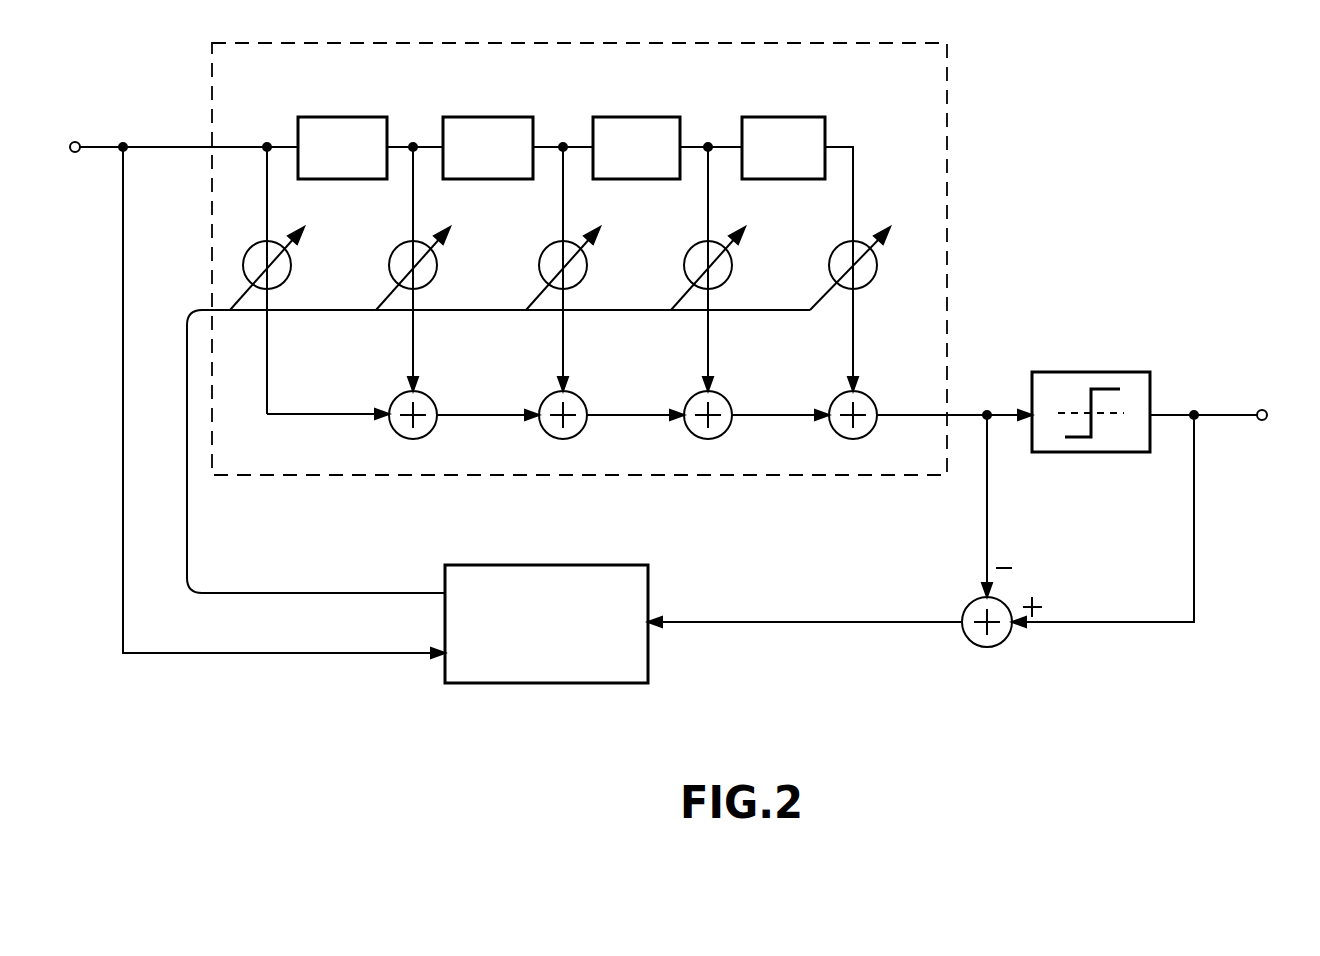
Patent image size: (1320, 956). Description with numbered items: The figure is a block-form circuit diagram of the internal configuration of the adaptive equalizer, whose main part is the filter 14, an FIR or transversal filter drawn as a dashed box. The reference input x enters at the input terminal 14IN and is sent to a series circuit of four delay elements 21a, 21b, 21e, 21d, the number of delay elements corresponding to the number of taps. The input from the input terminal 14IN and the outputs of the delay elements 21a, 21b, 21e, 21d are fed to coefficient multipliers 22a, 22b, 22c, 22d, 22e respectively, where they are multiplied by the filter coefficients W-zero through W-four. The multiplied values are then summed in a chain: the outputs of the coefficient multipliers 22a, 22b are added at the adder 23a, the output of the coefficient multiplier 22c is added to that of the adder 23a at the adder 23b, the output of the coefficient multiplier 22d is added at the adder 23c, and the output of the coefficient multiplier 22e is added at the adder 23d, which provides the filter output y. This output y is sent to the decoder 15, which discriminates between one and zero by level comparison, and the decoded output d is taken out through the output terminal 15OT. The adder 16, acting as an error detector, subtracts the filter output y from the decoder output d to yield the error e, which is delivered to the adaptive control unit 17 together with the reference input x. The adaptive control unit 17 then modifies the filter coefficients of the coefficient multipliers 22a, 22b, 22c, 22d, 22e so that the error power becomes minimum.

The filter 14 is at (947, 152).
The input terminal 14IN is at (75, 142).
The decoder 15 is at (1091, 372).
The output terminal 15OT is at (1262, 409).
The adder (error detector) 16 is at (1008, 640).
The adaptive control unit 17 is at (642, 595).
The delay element 21a is at (357, 117).
The delay element 21b is at (496, 117).
The delay element 21e is at (635, 117).
The delay element 21d is at (789, 117).
The coefficient multiplier 22a is at (287, 272).
The coefficient multiplier 22b is at (433, 272).
The coefficient multiplier 22c is at (583, 272).
The coefficient multiplier 22d is at (728, 272).
The coefficient multiplier 22e is at (869, 287).
The adder 23a is at (431, 403).
The adder 23b is at (581, 403).
The adder 23c is at (726, 403).
The adder 23d is at (869, 403).